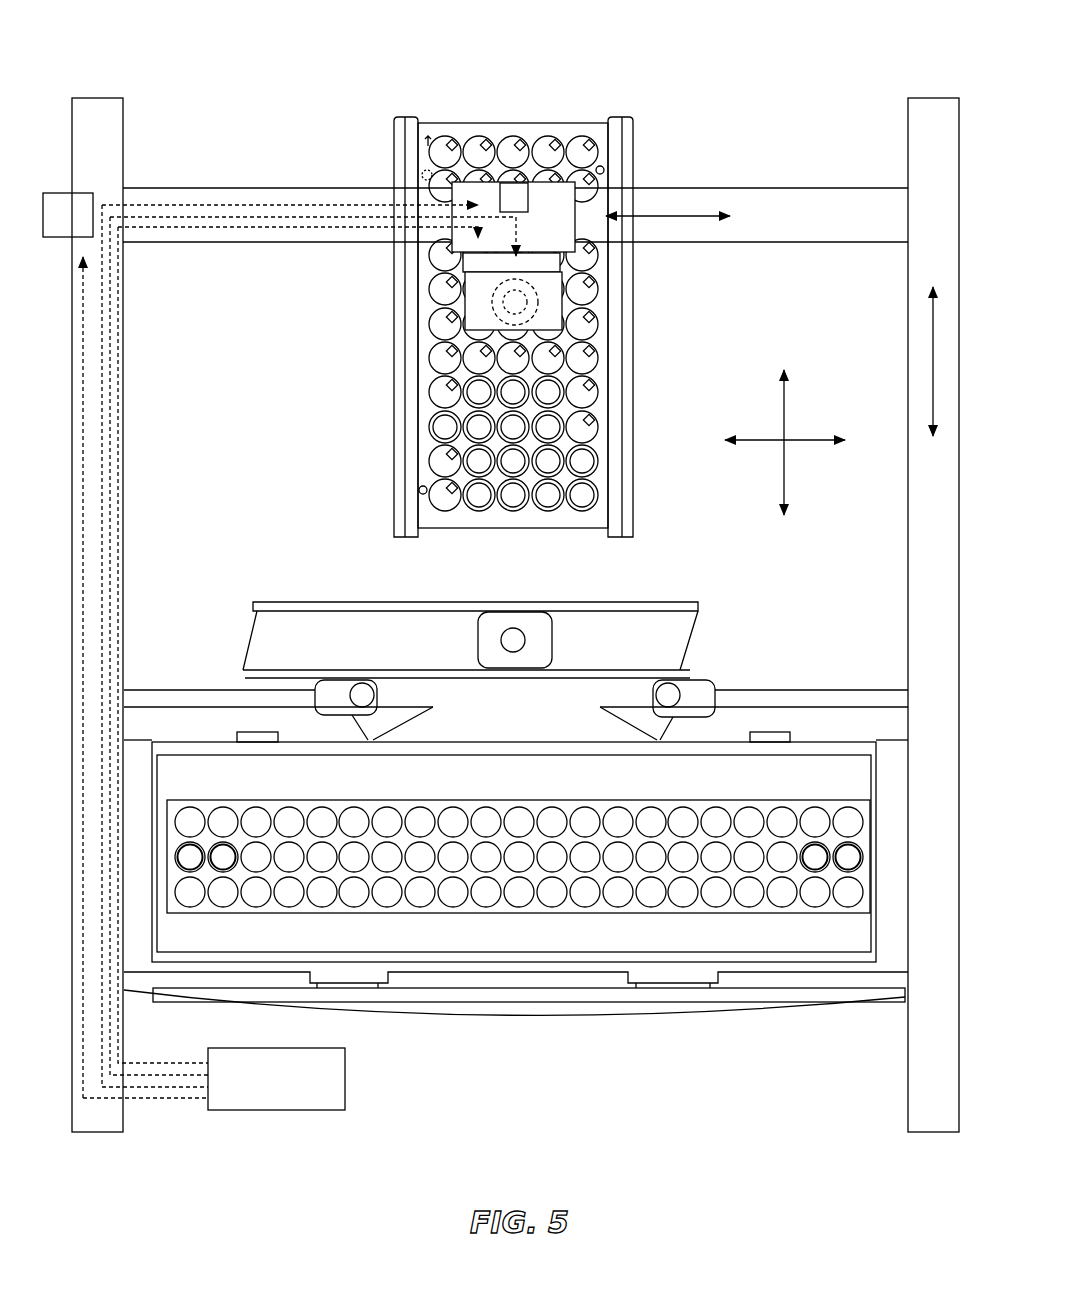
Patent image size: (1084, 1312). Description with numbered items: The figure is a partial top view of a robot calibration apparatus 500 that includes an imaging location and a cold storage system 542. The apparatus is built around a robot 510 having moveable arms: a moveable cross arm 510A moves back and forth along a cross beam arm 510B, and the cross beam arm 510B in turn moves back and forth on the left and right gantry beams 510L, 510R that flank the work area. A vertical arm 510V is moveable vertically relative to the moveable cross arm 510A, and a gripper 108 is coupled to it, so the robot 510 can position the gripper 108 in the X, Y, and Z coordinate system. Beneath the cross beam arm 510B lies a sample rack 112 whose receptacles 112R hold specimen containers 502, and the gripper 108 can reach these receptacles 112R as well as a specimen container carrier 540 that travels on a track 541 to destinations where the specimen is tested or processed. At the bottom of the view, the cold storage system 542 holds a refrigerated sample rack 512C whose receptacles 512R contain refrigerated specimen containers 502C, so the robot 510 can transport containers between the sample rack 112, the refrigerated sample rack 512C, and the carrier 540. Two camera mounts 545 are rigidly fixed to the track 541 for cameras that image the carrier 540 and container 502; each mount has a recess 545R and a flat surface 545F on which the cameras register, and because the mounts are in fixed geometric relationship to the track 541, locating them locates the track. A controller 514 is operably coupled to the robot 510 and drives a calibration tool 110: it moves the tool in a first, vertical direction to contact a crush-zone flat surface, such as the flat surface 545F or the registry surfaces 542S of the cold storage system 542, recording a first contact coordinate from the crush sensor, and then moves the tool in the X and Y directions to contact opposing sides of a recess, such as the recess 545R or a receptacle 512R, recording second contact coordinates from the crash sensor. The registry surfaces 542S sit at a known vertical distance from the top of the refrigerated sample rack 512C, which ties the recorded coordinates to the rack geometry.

The robot calibration apparatus 500 is at (695, 72).
The robot 510 is at (260, 125).
The moveable cross arm 510A is at (450, 198).
The cross beam arm 510B is at (753, 187).
The gantry beam 510L is at (125, 397).
The gantry beam 510R is at (908, 297).
The vertical arm 510V is at (463, 295).
The sample rack 112 is at (512, 112).
The receptacles 112R is at (598, 430).
The calibration tool 110 is at (528, 296).
The gripper 108 is at (537, 310).
The specimen container 502 is at (598, 497).
The controller 514 is at (278, 1110).
The specimen container carrier 540 is at (508, 610).
The track 541 is at (292, 602).
The camera mounts 545 is at (310, 678).
The flat surface 545F is at (332, 695).
The recess 545R is at (378, 682).
The cold storage system 542 is at (762, 1032).
The registry surfaces 542S is at (352, 972).
The refrigerated sample rack 512C is at (520, 798).
The receptacles 512R is at (220, 802).
The refrigerated specimen containers 502C is at (843, 842).